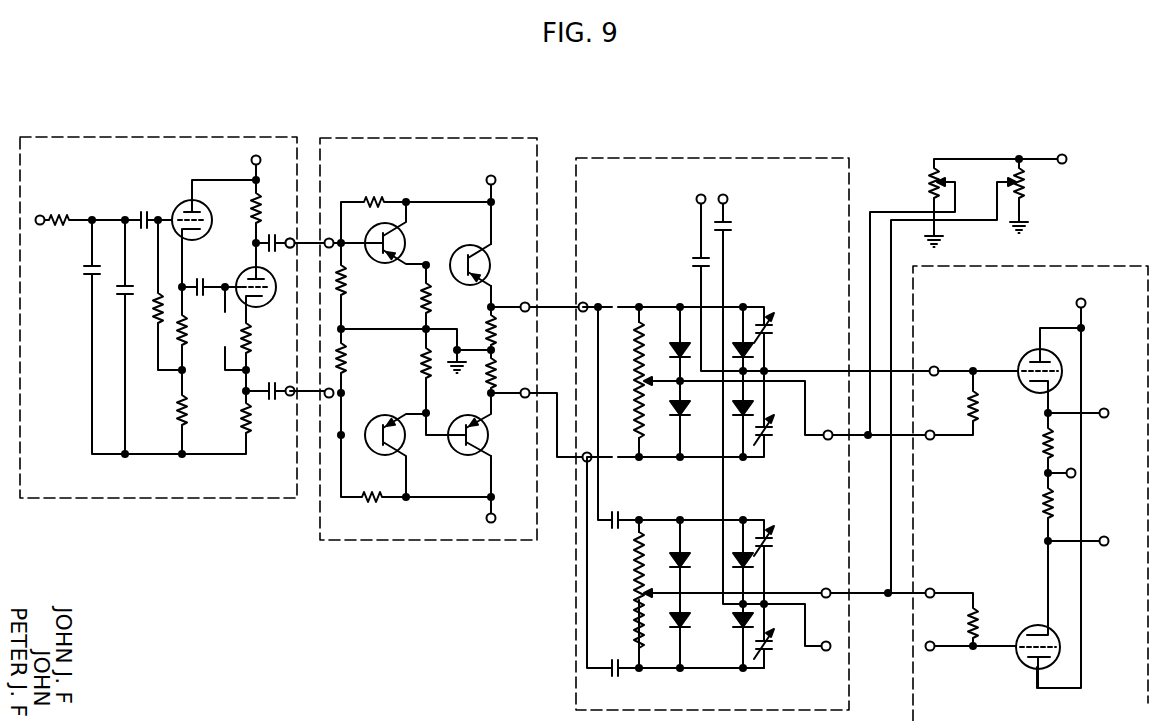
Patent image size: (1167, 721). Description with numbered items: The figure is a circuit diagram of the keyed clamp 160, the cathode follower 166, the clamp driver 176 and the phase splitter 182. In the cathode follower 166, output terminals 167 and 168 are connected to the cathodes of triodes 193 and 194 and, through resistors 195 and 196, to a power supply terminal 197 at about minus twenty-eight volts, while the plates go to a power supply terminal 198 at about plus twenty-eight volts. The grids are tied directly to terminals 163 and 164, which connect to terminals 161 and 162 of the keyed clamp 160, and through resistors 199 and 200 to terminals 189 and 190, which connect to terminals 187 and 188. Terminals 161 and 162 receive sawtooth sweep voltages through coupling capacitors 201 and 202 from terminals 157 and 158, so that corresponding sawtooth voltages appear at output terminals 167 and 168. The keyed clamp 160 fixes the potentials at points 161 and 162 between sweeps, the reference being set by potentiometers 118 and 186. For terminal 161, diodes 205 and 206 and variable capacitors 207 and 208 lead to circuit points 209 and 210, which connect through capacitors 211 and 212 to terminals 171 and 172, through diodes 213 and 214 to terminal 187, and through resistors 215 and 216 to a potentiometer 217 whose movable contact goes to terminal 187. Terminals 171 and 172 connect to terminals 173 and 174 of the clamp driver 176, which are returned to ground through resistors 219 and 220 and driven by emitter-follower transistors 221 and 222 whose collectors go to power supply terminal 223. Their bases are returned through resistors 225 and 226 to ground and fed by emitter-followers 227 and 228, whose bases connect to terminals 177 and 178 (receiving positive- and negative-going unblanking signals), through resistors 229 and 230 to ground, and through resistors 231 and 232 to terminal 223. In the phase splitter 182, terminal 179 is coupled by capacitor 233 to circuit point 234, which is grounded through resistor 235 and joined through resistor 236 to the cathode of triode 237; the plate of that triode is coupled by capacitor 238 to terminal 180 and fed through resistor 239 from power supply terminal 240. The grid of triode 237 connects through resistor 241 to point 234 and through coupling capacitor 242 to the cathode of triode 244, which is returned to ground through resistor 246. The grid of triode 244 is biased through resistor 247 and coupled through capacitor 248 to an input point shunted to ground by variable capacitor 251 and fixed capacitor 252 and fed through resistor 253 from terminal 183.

The potentiometer 118 is at (1028, 185).
The terminal 157 is at (725, 196).
The terminal 158 is at (697, 196).
The keyed clamp circuit 160 is at (795, 157).
The terminal 161 is at (824, 652).
The terminal 162 is at (838, 370).
The terminal 163 is at (931, 652).
The terminal 164 is at (945, 339).
The cathode follower 166 is at (1062, 266).
The output terminal 167 is at (1104, 547).
The output terminal 168 is at (1130, 388).
The terminal 171 is at (585, 462).
The terminal 172 is at (582, 311).
The terminal 173 is at (531, 393).
The terminal 174 is at (530, 306).
The clamp driver circuit 176 is at (513, 136).
The terminal 177 is at (305, 400).
The terminal 178 is at (332, 238).
The terminal 179 is at (297, 442).
The terminal 180 is at (292, 240).
The phase splitter circuit 182 is at (259, 135).
The terminal 183 is at (40, 214).
The potentiometer 186 is at (930, 178).
The terminal 187 is at (826, 588).
The terminal 188 is at (838, 415).
The terminal 189 is at (931, 588).
The terminal 190 is at (930, 440).
The triode 193 is at (1030, 626).
The triode 194 is at (1024, 357).
The resistor 195 is at (1042, 508).
The resistor 196 is at (1042, 440).
The power supply terminal 197 is at (1074, 478).
The power supply terminal 198 is at (1086, 303).
The resistor 199 is at (978, 603).
The resistor 200 is at (980, 407).
The coupling capacitor 201 is at (730, 223).
The coupling capacitor 202 is at (698, 256).
The diode 205 is at (737, 612).
The diode 206 is at (744, 549).
The variable capacitor 207 is at (783, 543).
The variable capacitor 208 is at (774, 542).
The circuit point 209 is at (680, 672).
The circuit point 210 is at (682, 517).
The capacitor 211 is at (612, 664).
The capacitor 212 is at (621, 518).
The diode 213 is at (673, 614).
The diode 214 is at (695, 548).
The resistor 215 is at (636, 628).
The resistor 216 is at (636, 552).
The potentiometer 217 is at (640, 590).
The resistor 219 is at (494, 367).
The resistor 220 is at (488, 332).
The transistor 221 is at (450, 417).
The transistor 222 is at (488, 261).
The power supply terminal 223 is at (495, 168).
The resistor 225 is at (423, 372).
The resistor 226 is at (433, 298).
The transistor 227 is at (366, 417).
The transistor 228 is at (405, 239).
The resistor 229 is at (344, 355).
The resistor 230 is at (343, 279).
The resistor 231 is at (367, 499).
The resistor 232 is at (385, 199).
The coupling capacitor 233 is at (278, 378).
The circuit point 234 is at (243, 375).
The resistor 235 is at (250, 412).
The resistor 236 is at (269, 340).
The triode 237 is at (276, 306).
The coupling capacitor 238 is at (278, 235).
The resistor 239 is at (253, 222).
The power supply terminal 240 is at (252, 160).
The resistor 241 is at (186, 334).
The coupling capacitor 242 is at (204, 293).
The triode 244 is at (237, 208).
The resistor 246 is at (180, 410).
The resistor 247 is at (154, 322).
The coupling capacitor 248 is at (144, 211).
The variable capacitor 251 is at (89, 273).
The fixed capacitor 252 is at (118, 295).
The resistor 253 is at (74, 216).